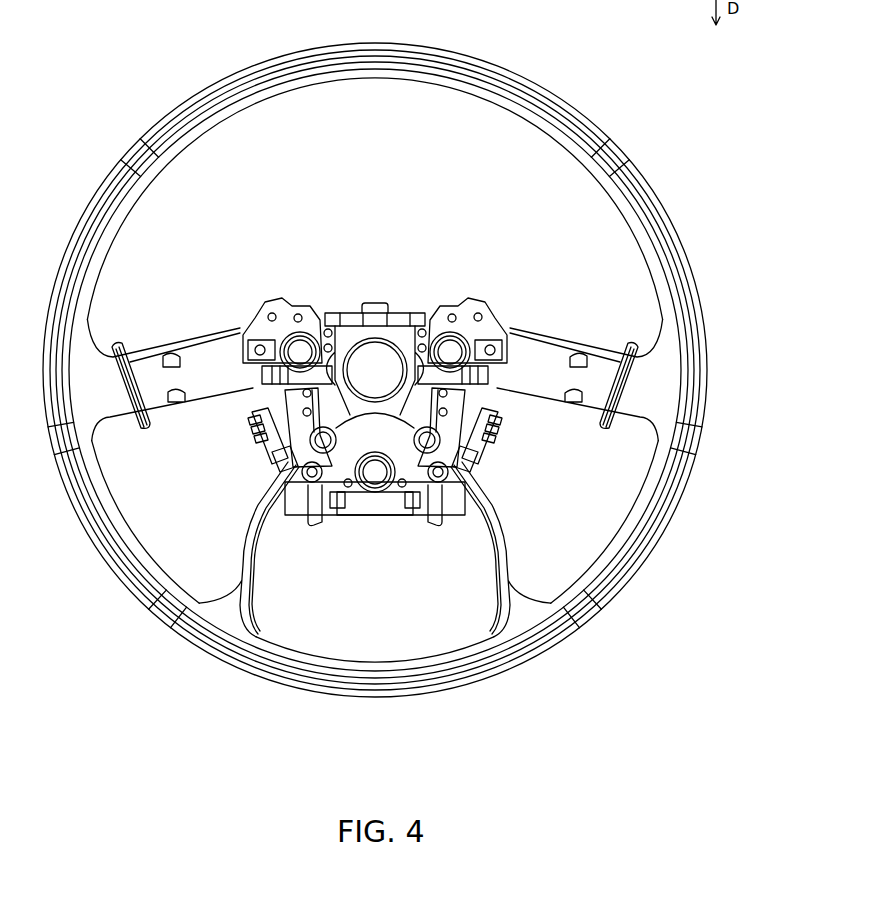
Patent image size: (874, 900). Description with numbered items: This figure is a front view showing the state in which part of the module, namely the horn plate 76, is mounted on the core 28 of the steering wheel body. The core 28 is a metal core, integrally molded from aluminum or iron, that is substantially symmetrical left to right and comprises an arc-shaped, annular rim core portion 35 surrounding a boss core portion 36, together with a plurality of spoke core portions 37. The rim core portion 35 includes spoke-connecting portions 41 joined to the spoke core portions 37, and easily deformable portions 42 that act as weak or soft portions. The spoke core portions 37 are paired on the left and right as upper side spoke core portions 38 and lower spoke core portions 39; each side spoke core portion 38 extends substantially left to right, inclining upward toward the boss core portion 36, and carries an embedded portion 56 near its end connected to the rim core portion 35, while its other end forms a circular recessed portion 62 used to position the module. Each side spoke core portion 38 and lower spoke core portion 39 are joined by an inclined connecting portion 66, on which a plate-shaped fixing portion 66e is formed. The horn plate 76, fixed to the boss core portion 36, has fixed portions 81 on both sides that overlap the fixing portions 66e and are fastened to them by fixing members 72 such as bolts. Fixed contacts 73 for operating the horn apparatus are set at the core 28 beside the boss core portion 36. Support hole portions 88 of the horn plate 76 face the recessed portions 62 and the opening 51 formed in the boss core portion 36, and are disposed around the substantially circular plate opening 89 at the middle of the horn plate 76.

The core 28 is at (593, 72).
The rim core portion 35 is at (449, 44).
The spoke-connecting portions 41 is at (75, 227).
The easily deformable portions 42 is at (373, 43).
The boss core portion 36 is at (279, 301).
The spoke core portions 37 is at (374, 469).
The side spoke core portions 38 is at (160, 352).
The lower spoke core portions 39 is at (243, 530).
The opening 51 is at (452, 518).
The embedded portion 56 is at (146, 432).
The recessed portion 62 is at (277, 328).
The connecting portion 66 is at (283, 404).
The fixing portion 66e is at (250, 426).
The fixing member 72 is at (275, 456).
The fixed contacts 73 is at (242, 325).
The horn plate 76 is at (384, 291).
The fixed portions 81 is at (262, 440).
The support hole portions 88 is at (315, 320).
The plate opening 89 is at (413, 323).